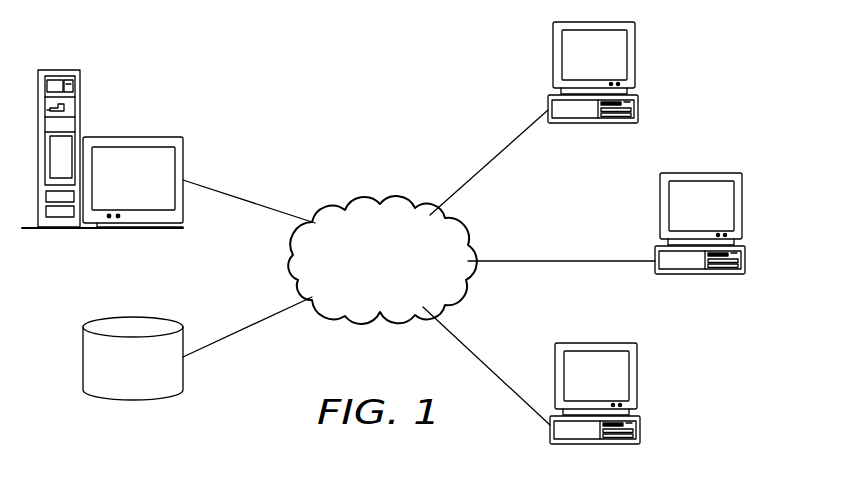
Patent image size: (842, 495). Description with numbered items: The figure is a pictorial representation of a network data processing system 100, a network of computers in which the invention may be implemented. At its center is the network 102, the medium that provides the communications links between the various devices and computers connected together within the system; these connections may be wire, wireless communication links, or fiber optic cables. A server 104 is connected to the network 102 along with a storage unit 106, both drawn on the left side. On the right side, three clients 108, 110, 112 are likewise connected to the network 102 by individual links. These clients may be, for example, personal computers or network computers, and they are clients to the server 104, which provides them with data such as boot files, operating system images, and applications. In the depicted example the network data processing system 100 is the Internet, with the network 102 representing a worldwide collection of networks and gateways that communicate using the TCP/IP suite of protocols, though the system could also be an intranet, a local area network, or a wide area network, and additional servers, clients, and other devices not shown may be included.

The network data processing system 100 is at (262, 60).
The network 102 is at (401, 287).
The server 104 is at (80, 94).
The storage unit 106 is at (83, 357).
The client 108 is at (635, 62).
The client 110 is at (742, 212).
The client 112 is at (637, 380).